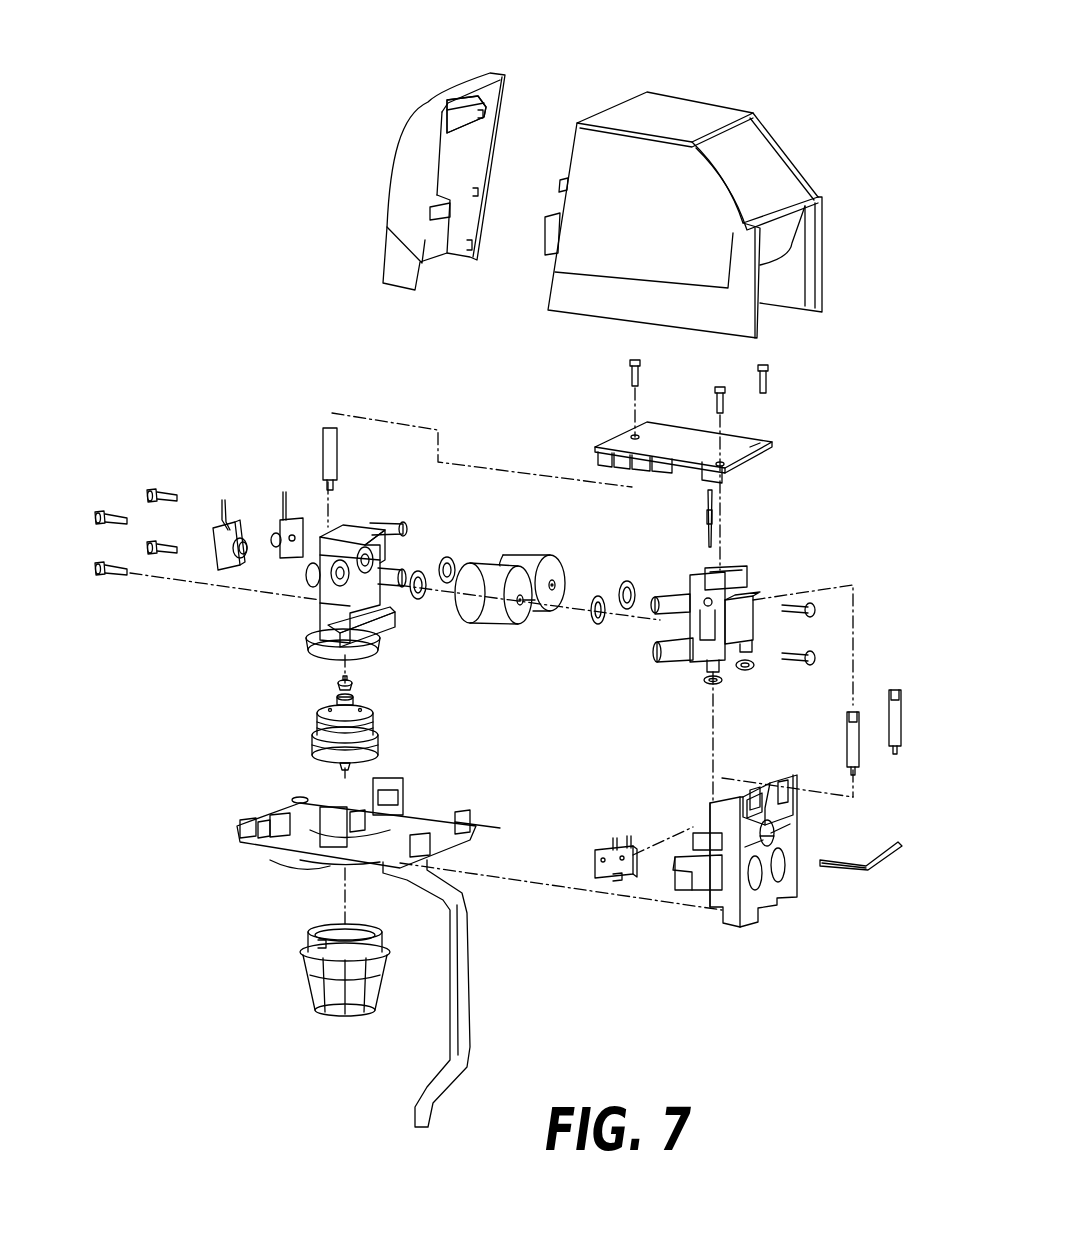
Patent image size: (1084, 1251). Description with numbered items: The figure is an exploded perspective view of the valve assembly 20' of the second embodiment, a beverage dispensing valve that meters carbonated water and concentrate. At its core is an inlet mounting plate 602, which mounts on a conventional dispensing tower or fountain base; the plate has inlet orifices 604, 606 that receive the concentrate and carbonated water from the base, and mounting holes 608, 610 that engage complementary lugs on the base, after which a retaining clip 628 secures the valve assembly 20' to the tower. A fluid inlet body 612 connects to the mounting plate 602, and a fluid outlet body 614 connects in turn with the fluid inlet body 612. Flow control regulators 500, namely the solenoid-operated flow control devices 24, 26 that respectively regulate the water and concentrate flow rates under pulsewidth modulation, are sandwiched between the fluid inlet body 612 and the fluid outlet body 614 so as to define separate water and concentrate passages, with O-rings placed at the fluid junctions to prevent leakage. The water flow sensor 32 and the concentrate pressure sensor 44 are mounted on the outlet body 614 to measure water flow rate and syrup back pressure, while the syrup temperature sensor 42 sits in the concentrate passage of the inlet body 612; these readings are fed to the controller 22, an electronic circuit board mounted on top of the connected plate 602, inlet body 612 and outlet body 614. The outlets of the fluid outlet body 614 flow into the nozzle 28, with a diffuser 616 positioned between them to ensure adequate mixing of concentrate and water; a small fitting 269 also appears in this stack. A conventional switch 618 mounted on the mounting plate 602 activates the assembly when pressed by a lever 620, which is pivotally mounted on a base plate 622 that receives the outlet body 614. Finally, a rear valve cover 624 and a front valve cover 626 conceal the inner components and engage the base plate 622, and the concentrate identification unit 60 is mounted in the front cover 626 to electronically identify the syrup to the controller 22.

The valve assembly 20' is at (792, 19).
The controller 22 is at (772, 443).
The flow control device 24 is at (537, 557).
The flow control device 26 is at (480, 623).
The nozzle 28 is at (312, 983).
The flow sensor 32 is at (272, 533).
The syrup temperature sensor 42 is at (708, 523).
The pressure sensor 44 is at (215, 530).
The concentrate identification unit 60 is at (465, 115).
The nut 269 is at (352, 682).
The flow control regulators 500 is at (535, 586).
The inlet mounting plate 602 is at (768, 913).
The inlet orifice 604 is at (765, 892).
The inlet orifice 606 is at (787, 877).
The mounting hole 608 is at (741, 797).
The mounting hole 610 is at (797, 797).
The fluid inlet body 612 is at (747, 577).
The fluid outlet body 614 is at (317, 620).
The diffuser 616 is at (377, 735).
The switch 618 is at (595, 858).
The lever 620 is at (467, 985).
The base plate 622 is at (238, 835).
The rear valve cover 624 is at (788, 157).
The front valve cover 626 is at (410, 123).
The retaining clip 628 is at (893, 853).